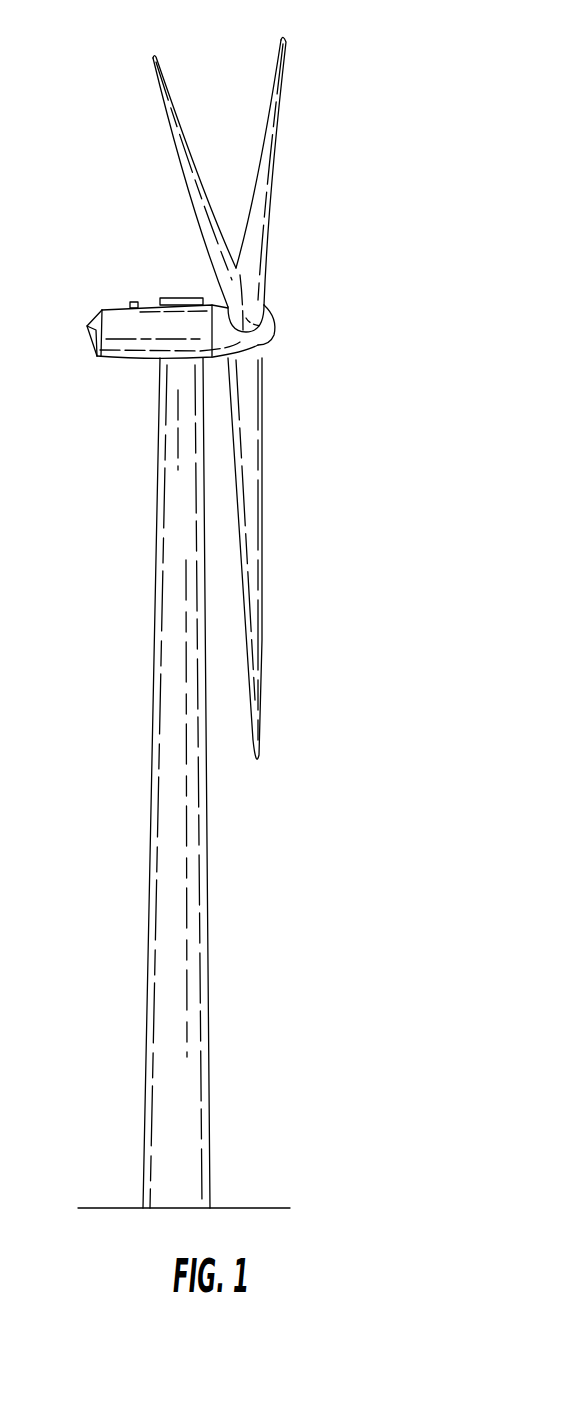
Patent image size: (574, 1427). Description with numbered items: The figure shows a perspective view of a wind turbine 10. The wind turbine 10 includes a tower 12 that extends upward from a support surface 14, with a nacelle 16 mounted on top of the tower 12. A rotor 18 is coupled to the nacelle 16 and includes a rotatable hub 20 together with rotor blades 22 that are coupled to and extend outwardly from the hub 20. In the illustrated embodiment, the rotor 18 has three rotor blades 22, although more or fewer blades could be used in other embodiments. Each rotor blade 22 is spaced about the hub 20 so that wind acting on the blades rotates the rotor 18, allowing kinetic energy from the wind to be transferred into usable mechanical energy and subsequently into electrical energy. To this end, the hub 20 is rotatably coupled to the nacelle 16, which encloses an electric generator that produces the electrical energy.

The wind turbine 10 is at (272, 622).
The tower 12 is at (202, 783).
The support surface 14 is at (184, 1159).
The nacelle 16 is at (172, 359).
The rotor 18 is at (260, 398).
The rotatable hub 20 is at (298, 315).
The rotor blade 22 is at (260, 398).